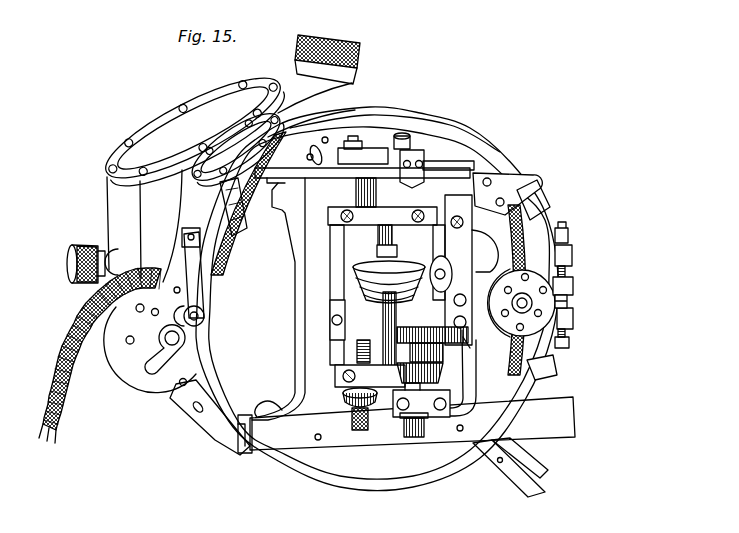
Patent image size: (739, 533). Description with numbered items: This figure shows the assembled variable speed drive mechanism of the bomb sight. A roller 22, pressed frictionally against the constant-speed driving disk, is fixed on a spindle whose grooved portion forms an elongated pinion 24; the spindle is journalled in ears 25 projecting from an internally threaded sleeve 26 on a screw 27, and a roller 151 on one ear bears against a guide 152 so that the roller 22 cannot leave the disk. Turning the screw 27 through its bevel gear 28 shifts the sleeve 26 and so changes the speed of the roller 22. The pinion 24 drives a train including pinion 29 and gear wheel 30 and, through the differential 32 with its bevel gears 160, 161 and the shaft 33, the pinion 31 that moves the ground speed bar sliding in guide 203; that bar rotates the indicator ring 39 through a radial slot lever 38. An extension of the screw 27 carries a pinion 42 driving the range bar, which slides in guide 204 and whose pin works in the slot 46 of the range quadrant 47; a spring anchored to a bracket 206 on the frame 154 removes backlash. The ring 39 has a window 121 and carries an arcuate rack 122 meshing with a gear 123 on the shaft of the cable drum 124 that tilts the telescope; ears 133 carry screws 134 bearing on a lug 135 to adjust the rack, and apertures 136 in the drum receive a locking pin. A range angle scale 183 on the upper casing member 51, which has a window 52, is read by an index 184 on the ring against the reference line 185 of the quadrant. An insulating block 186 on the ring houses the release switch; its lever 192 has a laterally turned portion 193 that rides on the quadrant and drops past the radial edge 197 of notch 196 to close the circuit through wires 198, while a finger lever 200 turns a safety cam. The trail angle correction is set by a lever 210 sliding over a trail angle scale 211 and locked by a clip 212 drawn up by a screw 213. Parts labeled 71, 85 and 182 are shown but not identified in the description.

The roller 22 is at (403, 240).
The elongated pinion 24 is at (376, 306).
The ears 25 is at (418, 277).
The internally threaded sleeve 26 is at (344, 262).
The screw 27 is at (359, 351).
The bevel gear 28 is at (330, 420).
The pinion 29 is at (453, 382).
The gear wheel 30 is at (432, 344).
The pinion 31 is at (402, 427).
The differential gear 32 is at (440, 369).
The shaft 33 is at (455, 404).
The radial slot lever 38 is at (540, 470).
The indicator ring 39 is at (416, 478).
The pinion 42 is at (377, 192).
The slot 46 is at (318, 162).
The range quadrant 47 is at (340, 148).
The upper casing member 51 is at (106, 220).
The window 52 is at (142, 152).
The knob 71 is at (346, 59).
The knob 85 is at (72, 264).
The window 121 is at (238, 149).
The arcuate rack 122 is at (530, 240).
The gear 123 is at (484, 244).
The cable drum 124 is at (520, 326).
The ears 133 is at (573, 255).
The screws 134 is at (569, 232).
The lug 135 is at (574, 285).
The apertures 136 is at (568, 301).
The roller 151 is at (446, 274).
The guide 152 is at (458, 216).
The frame 154 is at (291, 400).
The bevel gear 160 is at (421, 400).
The bevel gear 161 is at (370, 376).
The ring 182 is at (170, 200).
The range angle scale 183 is at (232, 188).
The index 184 is at (295, 178).
The reference line 185 is at (308, 130).
The block 186 is at (116, 338).
The lever 192 is at (206, 304).
The laterally turned portion 193 is at (203, 258).
The notch 196 is at (243, 223).
The radial edge 197 is at (230, 233).
The wires 198 is at (99, 363).
The finger lever 200 is at (162, 350).
The guide 203 is at (250, 452).
The guide 204 is at (285, 230).
The bracket 206 is at (517, 181).
The lever 210 is at (362, 150).
The trail angle scale 211 is at (481, 172).
The clip 212 is at (467, 162).
The screw 213 is at (417, 147).